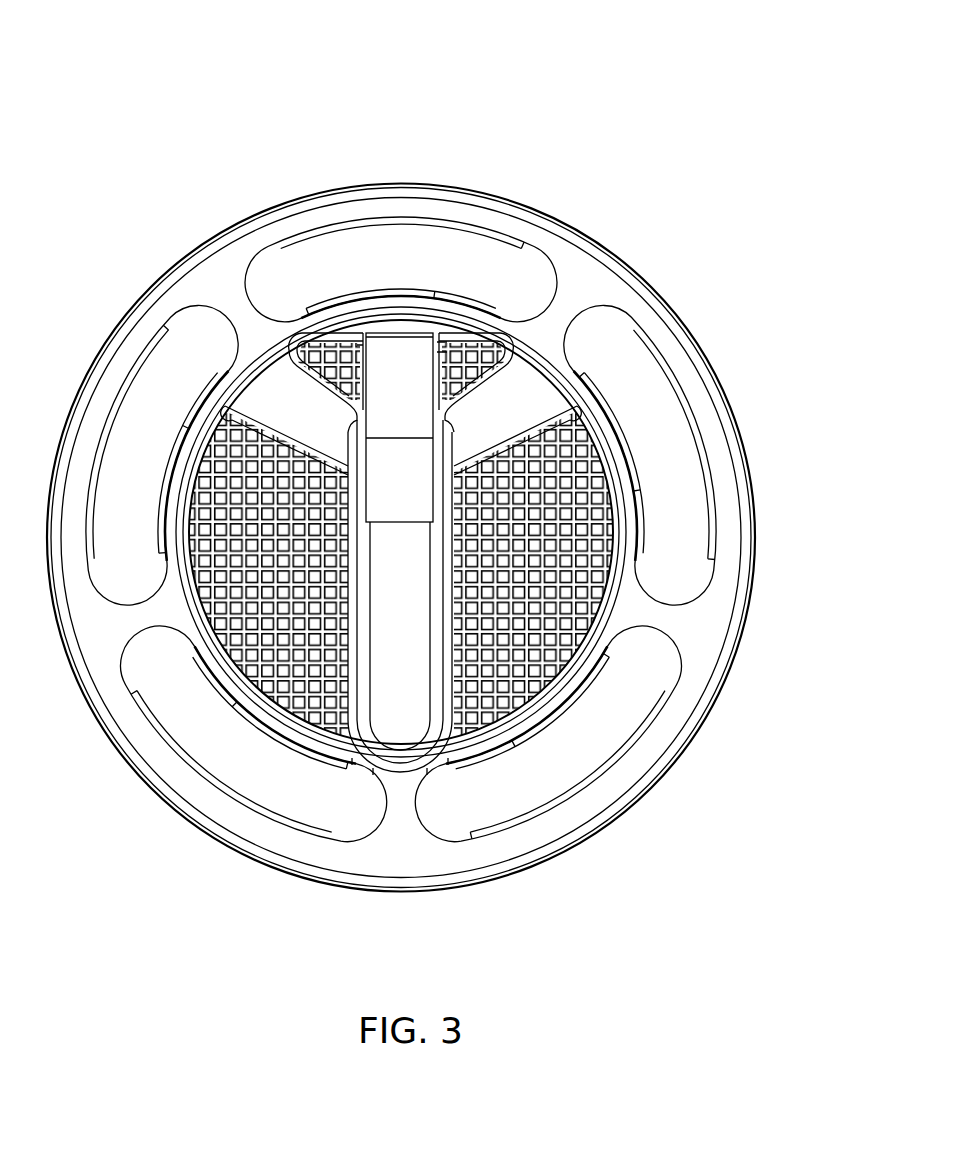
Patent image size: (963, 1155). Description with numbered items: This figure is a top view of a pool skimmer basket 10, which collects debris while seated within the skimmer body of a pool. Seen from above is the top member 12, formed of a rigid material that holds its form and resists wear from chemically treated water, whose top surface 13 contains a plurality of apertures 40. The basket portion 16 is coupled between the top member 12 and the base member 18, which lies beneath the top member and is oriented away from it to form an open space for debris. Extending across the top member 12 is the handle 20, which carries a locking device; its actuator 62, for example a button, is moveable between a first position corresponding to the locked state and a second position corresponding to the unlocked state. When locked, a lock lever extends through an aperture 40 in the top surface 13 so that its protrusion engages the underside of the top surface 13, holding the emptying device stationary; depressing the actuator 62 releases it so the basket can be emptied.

The pool skimmer basket 10 is at (162, 122).
The top member 12 is at (672, 252).
The top surface 13 is at (547, 397).
The basket portion 16 is at (260, 775).
The base member 18 is at (490, 717).
The handle 20 is at (387, 608).
The apertures 40 is at (476, 352).
The actuator 62 is at (402, 458).